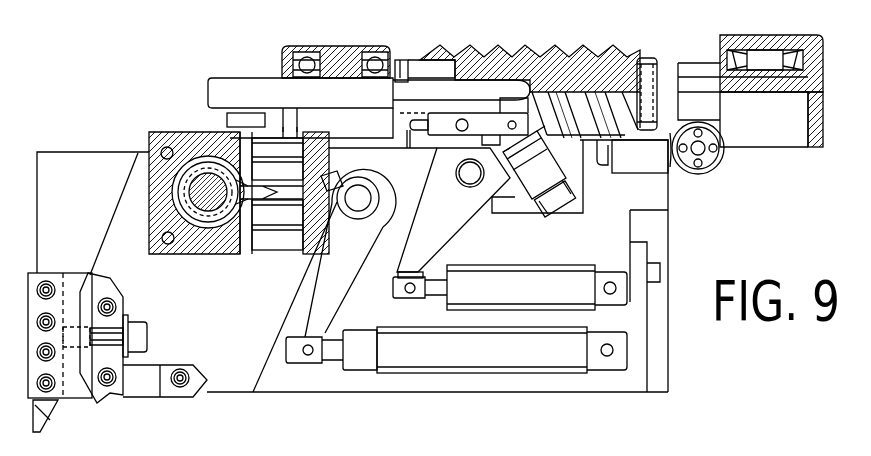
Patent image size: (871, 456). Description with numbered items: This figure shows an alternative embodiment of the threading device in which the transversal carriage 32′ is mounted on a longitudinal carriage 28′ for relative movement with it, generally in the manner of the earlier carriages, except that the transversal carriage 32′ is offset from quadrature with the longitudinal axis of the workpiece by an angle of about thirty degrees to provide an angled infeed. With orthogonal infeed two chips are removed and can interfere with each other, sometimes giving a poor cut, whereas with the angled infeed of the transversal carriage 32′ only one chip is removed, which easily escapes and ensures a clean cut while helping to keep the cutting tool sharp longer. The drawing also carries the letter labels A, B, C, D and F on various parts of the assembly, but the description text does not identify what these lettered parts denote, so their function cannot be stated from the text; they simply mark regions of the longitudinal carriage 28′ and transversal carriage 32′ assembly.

The longitudinal carriage 28′ is at (67, 167).
The transversal carriage 32′ is at (233, 372).
The block A is at (109, 186).
The stop B is at (332, 172).
The lever C is at (345, 266).
The plate D is at (446, 214).
The wall F is at (685, 259).